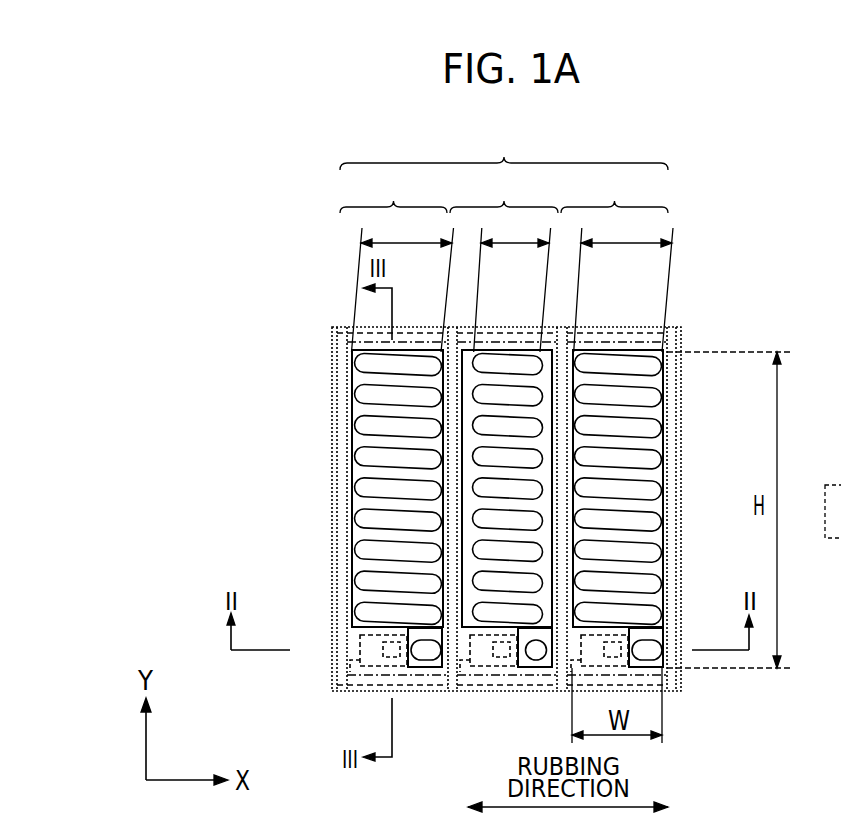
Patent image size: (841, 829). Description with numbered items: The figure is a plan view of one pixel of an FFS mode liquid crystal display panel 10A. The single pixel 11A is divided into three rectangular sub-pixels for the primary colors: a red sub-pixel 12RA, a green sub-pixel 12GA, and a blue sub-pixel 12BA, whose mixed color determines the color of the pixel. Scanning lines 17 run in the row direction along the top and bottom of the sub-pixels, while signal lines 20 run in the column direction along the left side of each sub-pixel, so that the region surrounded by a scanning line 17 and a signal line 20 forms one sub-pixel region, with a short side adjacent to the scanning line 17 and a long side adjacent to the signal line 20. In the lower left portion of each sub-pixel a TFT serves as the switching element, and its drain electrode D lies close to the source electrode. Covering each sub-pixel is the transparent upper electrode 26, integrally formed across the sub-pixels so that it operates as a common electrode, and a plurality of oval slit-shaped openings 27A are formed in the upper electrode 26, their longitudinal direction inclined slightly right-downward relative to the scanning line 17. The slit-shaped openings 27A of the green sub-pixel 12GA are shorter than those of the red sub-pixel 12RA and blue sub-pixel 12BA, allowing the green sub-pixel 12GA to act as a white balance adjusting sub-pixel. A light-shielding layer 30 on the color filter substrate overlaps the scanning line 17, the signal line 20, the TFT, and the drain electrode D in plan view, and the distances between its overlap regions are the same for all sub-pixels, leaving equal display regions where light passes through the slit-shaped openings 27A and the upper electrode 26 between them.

The liquid crystal display panel 10A is at (412, 115).
The single pixel 11A is at (504, 146).
The red sub-pixel 12RA is at (358, 429).
The green sub-pixel 12GA is at (508, 429).
The blue sub-pixel 12BA is at (618, 429).
The scanning line 17 is at (358, 341).
The signal line 20 is at (347, 551).
The upper electrode 26 is at (352, 470).
The slit-shaped opening 27A is at (353, 518).
The light-shielding layer 30 is at (337, 580).
The element TFT is at (362, 643).
The drain electrode D is at (833, 511).